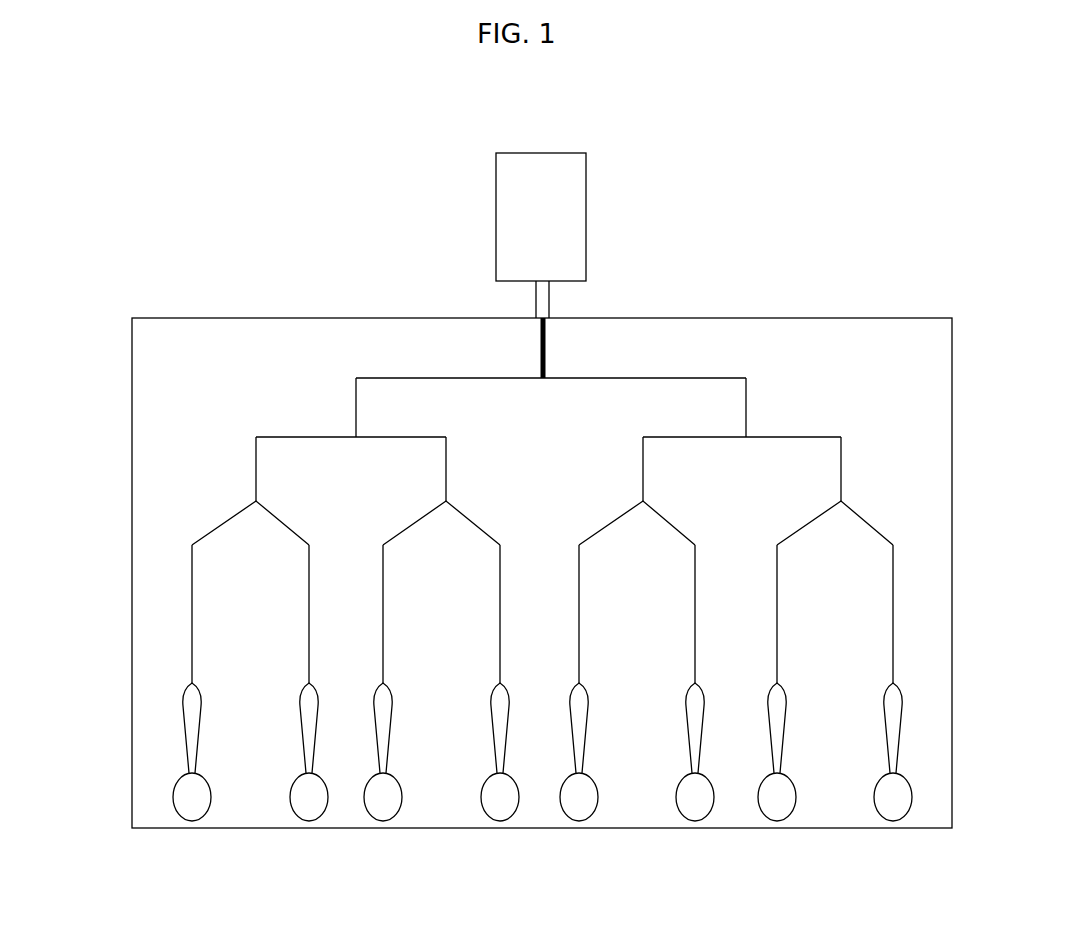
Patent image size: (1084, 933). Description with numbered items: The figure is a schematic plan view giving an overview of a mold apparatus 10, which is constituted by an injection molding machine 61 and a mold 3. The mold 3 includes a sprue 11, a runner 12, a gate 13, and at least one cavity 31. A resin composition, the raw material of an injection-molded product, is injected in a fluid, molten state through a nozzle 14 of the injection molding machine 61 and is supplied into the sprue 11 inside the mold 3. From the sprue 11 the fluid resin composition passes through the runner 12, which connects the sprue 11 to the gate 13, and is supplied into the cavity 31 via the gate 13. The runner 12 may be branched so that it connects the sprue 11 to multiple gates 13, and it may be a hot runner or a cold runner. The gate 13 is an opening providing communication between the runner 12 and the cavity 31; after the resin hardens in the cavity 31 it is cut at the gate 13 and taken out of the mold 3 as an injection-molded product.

The mold apparatus 10 is at (862, 132).
The mold 3 is at (200, 318).
The injection molding machine 61 is at (558, 153).
The nozzle 14 is at (535, 316).
The sprue 11 is at (545, 338).
The runner 12 is at (462, 378).
The gate 13 is at (192, 680).
The cavity 31 is at (192, 798).